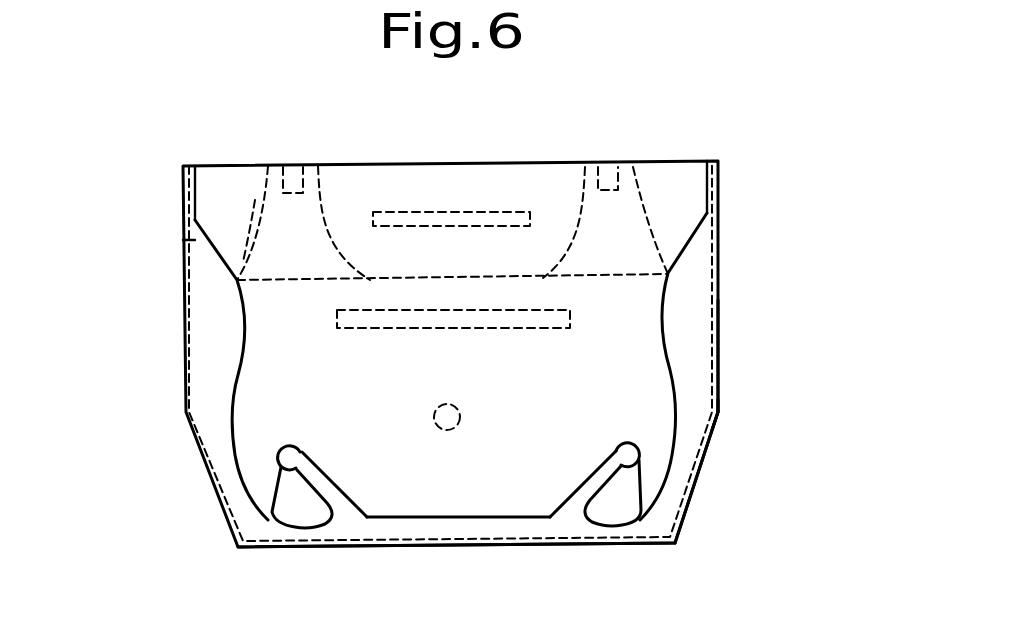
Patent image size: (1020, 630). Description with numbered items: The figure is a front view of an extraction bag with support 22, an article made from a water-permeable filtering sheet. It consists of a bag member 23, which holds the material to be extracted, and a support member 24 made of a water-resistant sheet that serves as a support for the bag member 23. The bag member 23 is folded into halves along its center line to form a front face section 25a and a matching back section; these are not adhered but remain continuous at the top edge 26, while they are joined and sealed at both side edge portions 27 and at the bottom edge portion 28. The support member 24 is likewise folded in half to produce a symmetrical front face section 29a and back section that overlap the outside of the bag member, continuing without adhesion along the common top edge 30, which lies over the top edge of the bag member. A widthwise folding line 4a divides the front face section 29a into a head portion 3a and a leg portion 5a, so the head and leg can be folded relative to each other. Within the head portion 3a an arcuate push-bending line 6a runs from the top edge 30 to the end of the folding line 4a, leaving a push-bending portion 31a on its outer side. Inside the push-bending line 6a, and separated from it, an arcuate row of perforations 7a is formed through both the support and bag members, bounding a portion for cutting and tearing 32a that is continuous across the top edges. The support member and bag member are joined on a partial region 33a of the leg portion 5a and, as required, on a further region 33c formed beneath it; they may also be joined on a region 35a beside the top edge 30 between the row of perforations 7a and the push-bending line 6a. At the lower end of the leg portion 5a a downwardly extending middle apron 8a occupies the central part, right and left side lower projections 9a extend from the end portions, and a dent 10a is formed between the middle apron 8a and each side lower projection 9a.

The extraction bag with support 22 is at (733, 167).
The bag member 23 is at (722, 340).
The support member 24 is at (720, 411).
The front face section of bag member 25a is at (708, 457).
The top edge of bag member 26 is at (707, 162).
The side edge portion of bag member 27 is at (717, 230).
The bottom edge portion of bag member 28 is at (543, 544).
The front face section of support member 29a is at (660, 378).
The top edge of support member 30 is at (567, 161).
The push-bending portion 31a is at (227, 182).
The portion for cutting and tearing 32a is at (480, 190).
The partial joining region 33a is at (560, 320).
The partial joining region 33c is at (445, 423).
The joining region 35a is at (295, 166).
The head portion 3a is at (283, 247).
The folding line 4a is at (617, 273).
The leg portion 5a is at (277, 412).
The push-bending line 6a is at (263, 207).
The row of perforations 7a is at (328, 253).
The middle apron 8a is at (460, 490).
The side lower projection 9a is at (297, 500).
The dent 10a is at (288, 458).